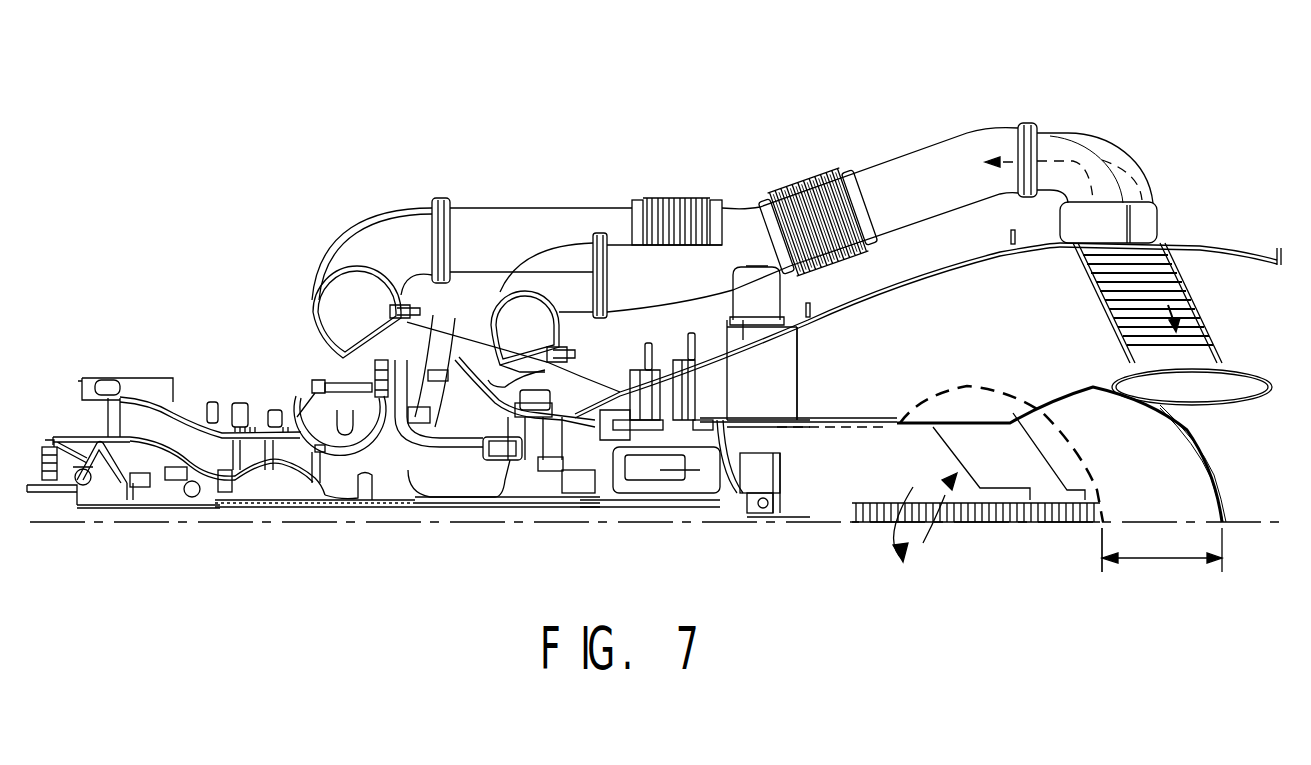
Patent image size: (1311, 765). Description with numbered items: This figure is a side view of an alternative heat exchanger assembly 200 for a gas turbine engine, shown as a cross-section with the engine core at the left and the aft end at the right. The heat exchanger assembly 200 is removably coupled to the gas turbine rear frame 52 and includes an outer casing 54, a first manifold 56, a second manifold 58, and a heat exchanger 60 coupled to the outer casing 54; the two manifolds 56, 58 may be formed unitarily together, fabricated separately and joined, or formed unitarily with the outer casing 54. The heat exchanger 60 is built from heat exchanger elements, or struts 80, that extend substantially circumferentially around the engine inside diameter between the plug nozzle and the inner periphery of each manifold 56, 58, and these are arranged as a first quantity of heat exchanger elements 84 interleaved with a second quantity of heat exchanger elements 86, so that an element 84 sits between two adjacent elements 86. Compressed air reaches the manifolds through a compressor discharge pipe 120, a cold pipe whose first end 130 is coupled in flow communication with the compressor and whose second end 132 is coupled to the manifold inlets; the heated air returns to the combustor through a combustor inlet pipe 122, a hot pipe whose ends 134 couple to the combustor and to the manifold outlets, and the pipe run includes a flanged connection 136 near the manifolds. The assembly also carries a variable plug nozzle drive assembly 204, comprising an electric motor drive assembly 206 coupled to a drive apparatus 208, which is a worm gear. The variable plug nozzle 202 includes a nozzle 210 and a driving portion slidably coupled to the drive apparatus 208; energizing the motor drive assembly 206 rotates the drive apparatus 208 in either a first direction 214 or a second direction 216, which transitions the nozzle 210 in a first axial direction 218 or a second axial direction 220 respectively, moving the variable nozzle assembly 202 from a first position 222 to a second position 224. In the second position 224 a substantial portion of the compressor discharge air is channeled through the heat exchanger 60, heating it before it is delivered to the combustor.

The heat exchanger assembly 200 is at (1123, 93).
The flange 136 is at (1017, 130).
The combustor inlet pipe 122 is at (920, 207).
The second end of compressor discharge pipe 132 is at (733, 212).
The compressor discharge pipe 120 is at (497, 217).
The first end of compressor discharge pipe 130 is at (340, 302).
The end of combustor inlet pipe 134 is at (540, 317).
The electric motor drive assembly 206 is at (787, 280).
The variable plug nozzle drive assembly 204 is at (813, 352).
The gas turbine rear frame 52 is at (837, 420).
The second manifold 58 is at (1073, 222).
The first manifold 56 is at (1150, 227).
The outer casing 54 is at (1233, 247).
The heat exchanger 60 is at (1073, 273).
The heat exchanger element 80 is at (1170, 265).
The first quantity of heat exchanger elements 84 is at (1110, 307).
The second quantity of heat exchanger elements 86 is at (1190, 320).
The variable plug nozzle 202 is at (1200, 442).
The nozzle 210 is at (1220, 495).
The drive apparatus 208 is at (875, 503).
The second direction 216 is at (888, 530).
The first direction 214 is at (923, 543).
The first position 222 is at (1102, 540).
The first axial direction 218 is at (1102, 568).
The second position 224 is at (1223, 540).
The second axial direction 220 is at (1160, 558).